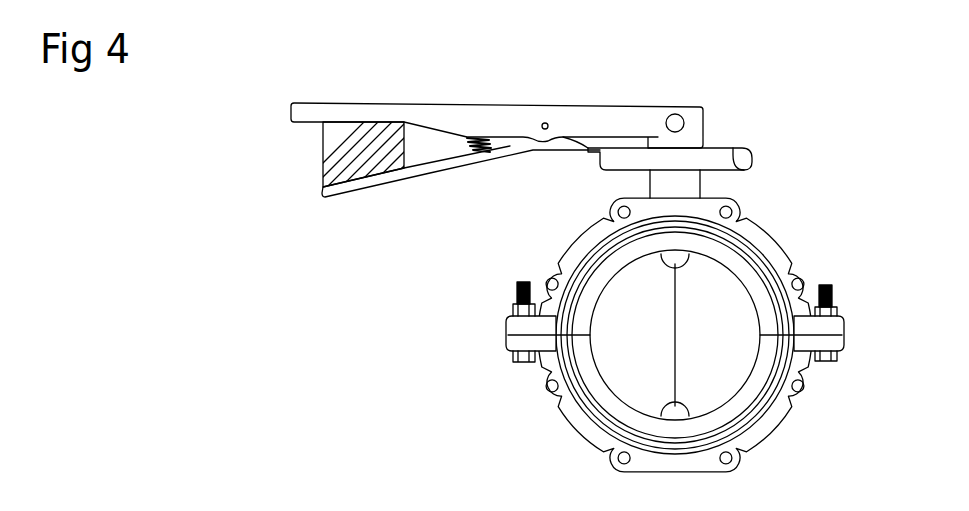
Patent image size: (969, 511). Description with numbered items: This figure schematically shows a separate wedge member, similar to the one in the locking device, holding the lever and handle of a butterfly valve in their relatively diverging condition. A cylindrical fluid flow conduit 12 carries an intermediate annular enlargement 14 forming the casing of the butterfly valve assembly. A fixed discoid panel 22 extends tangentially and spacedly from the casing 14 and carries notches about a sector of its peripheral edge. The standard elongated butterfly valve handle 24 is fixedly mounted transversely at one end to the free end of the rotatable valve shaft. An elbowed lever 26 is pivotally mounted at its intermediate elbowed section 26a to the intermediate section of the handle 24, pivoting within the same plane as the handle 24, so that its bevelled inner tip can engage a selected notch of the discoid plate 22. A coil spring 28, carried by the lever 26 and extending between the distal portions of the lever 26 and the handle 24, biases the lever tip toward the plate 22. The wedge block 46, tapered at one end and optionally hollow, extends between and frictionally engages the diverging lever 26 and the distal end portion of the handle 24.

The cylindrical fluid flow conduit 12 is at (740, 356).
The intermediate annular enlargement 14 is at (789, 255).
The fixed discoid panel 22 is at (752, 168).
The butterfly valve handle 24 is at (357, 110).
The elbowed lever 26 is at (322, 195).
The intermediate elbowed section 26a is at (549, 123).
The coil spring 28 is at (470, 145).
The wedge block 46 is at (327, 144).